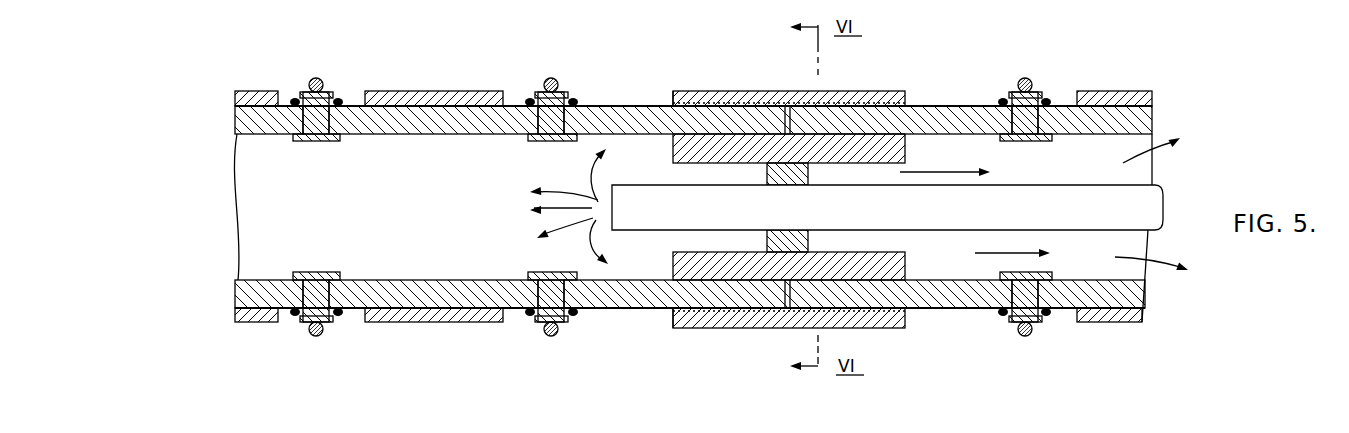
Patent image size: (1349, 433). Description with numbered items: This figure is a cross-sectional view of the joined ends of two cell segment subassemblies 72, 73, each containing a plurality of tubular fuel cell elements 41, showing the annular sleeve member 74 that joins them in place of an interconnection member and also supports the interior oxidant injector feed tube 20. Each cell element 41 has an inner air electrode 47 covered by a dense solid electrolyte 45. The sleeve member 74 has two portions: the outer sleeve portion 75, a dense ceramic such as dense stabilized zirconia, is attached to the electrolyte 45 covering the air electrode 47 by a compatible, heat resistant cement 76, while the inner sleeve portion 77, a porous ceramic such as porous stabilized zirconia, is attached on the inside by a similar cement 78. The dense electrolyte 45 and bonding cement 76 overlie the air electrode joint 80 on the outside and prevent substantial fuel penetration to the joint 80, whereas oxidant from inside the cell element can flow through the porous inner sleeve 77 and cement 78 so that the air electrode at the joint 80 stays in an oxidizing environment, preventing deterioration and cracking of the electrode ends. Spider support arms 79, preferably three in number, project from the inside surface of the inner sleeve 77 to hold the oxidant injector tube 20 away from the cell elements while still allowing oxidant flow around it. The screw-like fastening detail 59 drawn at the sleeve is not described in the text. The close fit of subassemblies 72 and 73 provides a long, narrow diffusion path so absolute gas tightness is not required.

The oxidant injector feed tube 20 is at (1055, 205).
The fuel cell element 41 is at (492, 73).
The solid electrolyte 45 is at (983, 104).
The air electrode 47 is at (950, 118).
The clamp screw 59 is at (1034, 81).
The subassembly 72 is at (1178, 51).
The subassembly 73 is at (335, 51).
The annular sleeve member 74 is at (907, 85).
The outer sleeve portion 75 is at (706, 91).
The cement 76 is at (673, 103).
The inner sleeve portion 77 is at (673, 160).
The cement 78 is at (906, 276).
The spider support arms 79 is at (767, 175).
The air electrode joint 80 is at (772, 308).